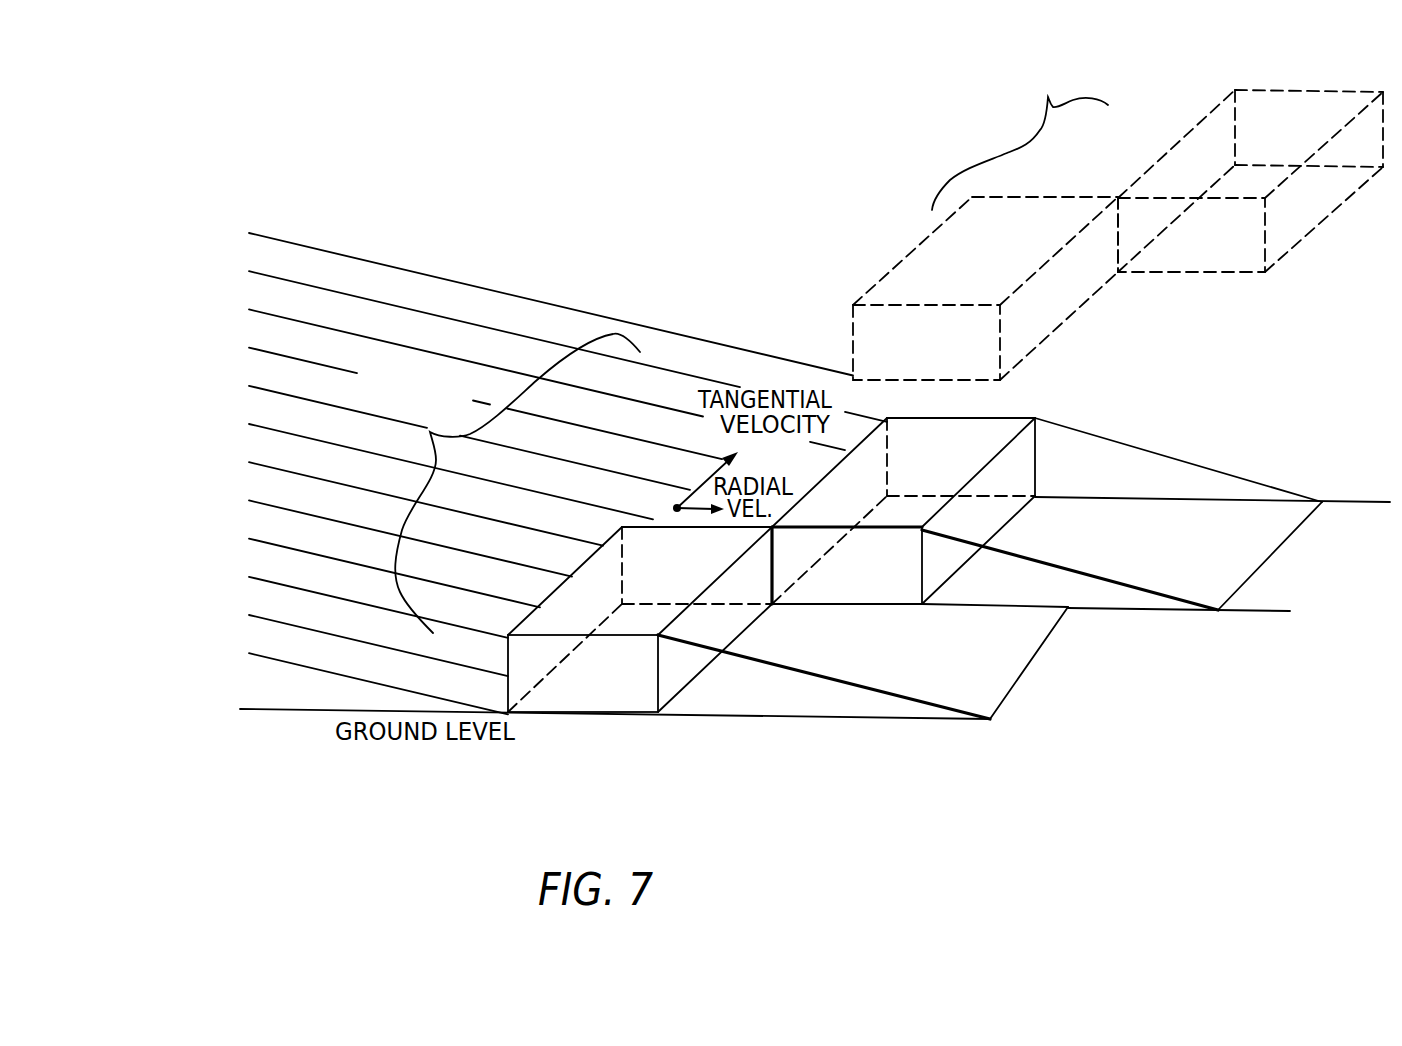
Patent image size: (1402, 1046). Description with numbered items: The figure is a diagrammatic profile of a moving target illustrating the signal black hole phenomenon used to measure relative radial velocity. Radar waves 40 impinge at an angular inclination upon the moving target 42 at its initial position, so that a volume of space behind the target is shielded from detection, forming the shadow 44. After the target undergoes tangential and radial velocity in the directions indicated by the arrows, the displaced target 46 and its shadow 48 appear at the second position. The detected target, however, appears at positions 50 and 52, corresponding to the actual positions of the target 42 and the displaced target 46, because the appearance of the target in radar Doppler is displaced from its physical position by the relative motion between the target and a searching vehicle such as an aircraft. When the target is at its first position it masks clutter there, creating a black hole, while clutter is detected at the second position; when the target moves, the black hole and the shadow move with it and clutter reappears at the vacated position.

The radar waves 40 is at (250, 652).
The moving target at initial position 42 is at (507, 664).
The shadow 44 is at (713, 705).
The displaced target 46 is at (1008, 470).
The displaced target shadow 48 is at (1136, 445).
The detected target position 50 is at (853, 345).
The detected target position 52 is at (1207, 118).